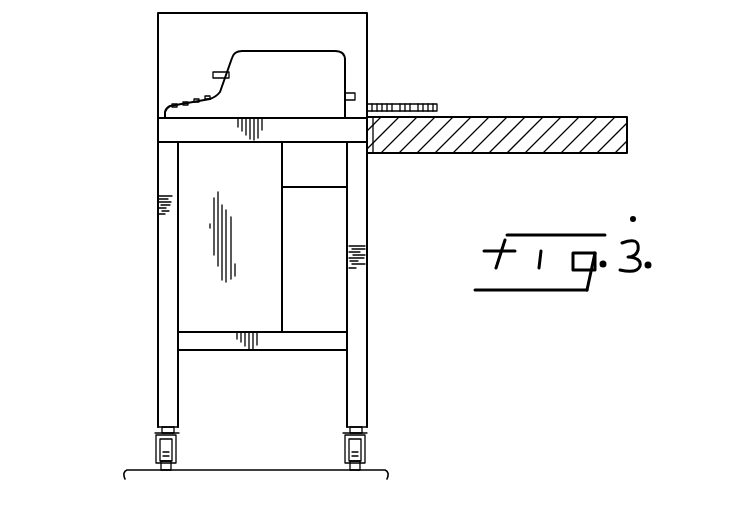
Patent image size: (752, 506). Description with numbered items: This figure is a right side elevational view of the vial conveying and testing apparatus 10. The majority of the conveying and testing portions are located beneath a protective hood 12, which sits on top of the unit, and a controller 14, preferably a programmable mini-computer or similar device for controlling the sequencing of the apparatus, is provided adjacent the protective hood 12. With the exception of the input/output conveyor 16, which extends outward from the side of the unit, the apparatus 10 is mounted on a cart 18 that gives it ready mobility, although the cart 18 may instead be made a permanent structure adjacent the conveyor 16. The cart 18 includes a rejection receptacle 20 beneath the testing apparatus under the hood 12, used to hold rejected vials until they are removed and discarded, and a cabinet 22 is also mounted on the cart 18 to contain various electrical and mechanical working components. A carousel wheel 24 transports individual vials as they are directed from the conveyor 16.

The apparatus 10 is at (132, 142).
The protective hood 12 is at (165, 45).
The controller 14 is at (339, 68).
The input/output conveyor 16 is at (577, 122).
The cart 18 is at (163, 213).
The rejection receptacle 20 is at (331, 164).
The cabinet 22 is at (193, 270).
The carousel wheel 24 is at (415, 104).